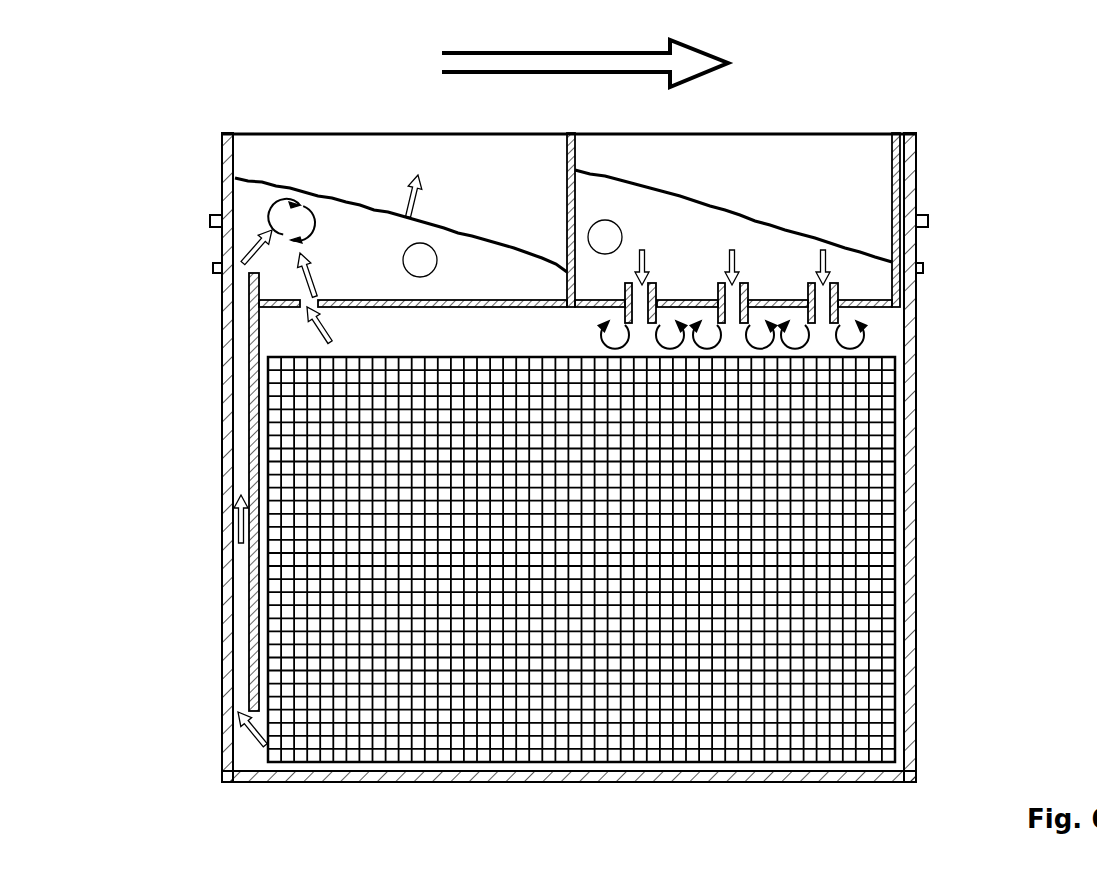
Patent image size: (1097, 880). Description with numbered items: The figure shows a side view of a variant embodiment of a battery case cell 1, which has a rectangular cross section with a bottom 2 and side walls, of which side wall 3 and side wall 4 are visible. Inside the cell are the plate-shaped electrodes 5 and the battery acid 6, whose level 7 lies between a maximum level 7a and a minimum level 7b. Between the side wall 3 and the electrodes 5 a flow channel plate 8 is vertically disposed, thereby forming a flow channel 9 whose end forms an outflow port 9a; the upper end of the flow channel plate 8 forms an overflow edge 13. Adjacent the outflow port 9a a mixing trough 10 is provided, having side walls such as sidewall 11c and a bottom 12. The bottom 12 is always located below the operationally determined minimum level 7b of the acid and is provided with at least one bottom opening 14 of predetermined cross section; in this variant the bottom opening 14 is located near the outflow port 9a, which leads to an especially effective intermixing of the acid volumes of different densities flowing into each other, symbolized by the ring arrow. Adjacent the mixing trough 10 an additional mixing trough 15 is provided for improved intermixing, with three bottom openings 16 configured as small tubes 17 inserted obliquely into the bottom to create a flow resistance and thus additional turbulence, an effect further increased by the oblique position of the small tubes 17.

The battery case cell 1 is at (613, 489).
The bottom 2 is at (270, 783).
The side wall 3 is at (222, 655).
The side wall 4 is at (916, 615).
The plate-shaped electrodes 5 is at (300, 500).
The battery acid 6 is at (305, 328).
The level 7 is at (272, 176).
The maximum level 7a is at (930, 218).
The minimum level 7b is at (925, 268).
The flow channel plate 8 is at (252, 422).
The flow channel 9 is at (240, 555).
The outflow port 9a is at (241, 268).
The mixing trough 10 is at (352, 225).
The sidewall 11c is at (567, 160).
The bottom 12 is at (357, 300).
The overflow edge 13 is at (312, 298).
The bottom opening 14 is at (322, 299).
The additional mixing trough 15 is at (605, 237).
The bottom openings 16 is at (836, 283).
The small tubes 17 is at (825, 248).